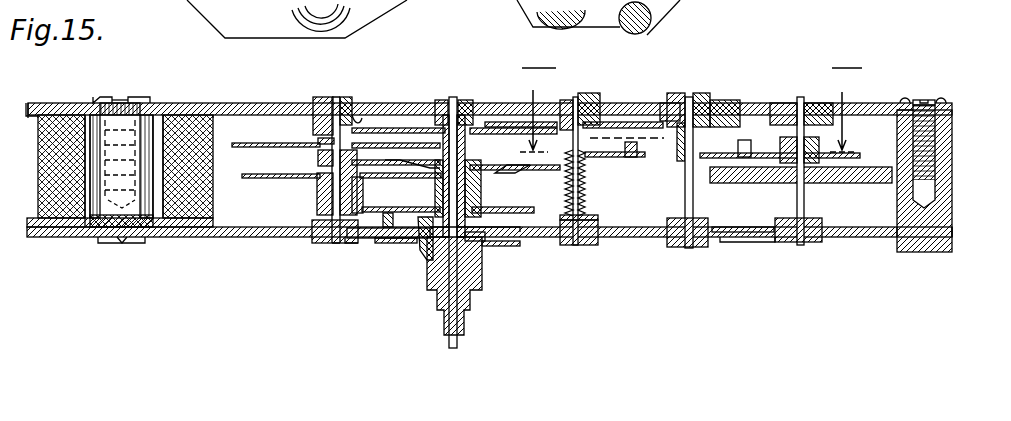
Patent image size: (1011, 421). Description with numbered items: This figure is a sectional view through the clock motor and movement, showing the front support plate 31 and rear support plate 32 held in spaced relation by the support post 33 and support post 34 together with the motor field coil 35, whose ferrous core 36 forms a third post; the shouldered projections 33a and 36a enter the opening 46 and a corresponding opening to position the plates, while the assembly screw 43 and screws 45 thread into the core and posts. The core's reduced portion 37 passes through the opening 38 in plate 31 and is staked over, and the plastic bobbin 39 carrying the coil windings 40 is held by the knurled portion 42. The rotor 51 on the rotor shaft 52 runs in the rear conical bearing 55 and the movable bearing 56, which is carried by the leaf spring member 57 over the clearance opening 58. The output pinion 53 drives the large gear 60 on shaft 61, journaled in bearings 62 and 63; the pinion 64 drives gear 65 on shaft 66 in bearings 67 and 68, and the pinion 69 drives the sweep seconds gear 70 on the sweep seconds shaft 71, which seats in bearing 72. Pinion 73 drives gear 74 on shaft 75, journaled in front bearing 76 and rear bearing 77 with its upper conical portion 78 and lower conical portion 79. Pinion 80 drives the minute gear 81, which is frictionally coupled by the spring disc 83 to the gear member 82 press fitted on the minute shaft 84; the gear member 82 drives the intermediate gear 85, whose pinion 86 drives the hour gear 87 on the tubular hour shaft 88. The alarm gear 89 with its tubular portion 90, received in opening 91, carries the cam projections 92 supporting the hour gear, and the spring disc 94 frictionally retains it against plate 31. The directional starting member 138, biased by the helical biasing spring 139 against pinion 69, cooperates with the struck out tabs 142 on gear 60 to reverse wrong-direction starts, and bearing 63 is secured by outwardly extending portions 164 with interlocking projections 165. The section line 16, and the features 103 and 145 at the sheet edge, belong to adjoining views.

The front support plate 31 is at (248, 238).
The rear support plate 32 is at (222, 104).
The support post 33 is at (955, 214).
The shouldered projection 33a is at (944, 103).
The support post 34 is at (528, 14).
The motor field coil 35 is at (36, 175).
The ferrous core 36 is at (146, 118).
The shouldered projection 36a is at (124, 102).
The reduced portion 37 is at (106, 240).
The opening 38 is at (130, 240).
The plastic bobbin 39 is at (30, 110).
The coil windings 40 is at (58, 125).
The knurled portion 42 is at (88, 232).
The assembly screw 43 is at (106, 100).
The screw 45 is at (926, 100).
The opening 46 is at (912, 103).
The rotor 51 is at (832, 182).
The rotor shaft 52 is at (798, 195).
The output pinion 53 is at (810, 158).
The rear conical bearing 55 is at (802, 102).
The movable bearing 56 is at (806, 246).
The leaf spring member 57 is at (756, 226).
The clearance opening 58 is at (756, 242).
The large gear 60 is at (608, 158).
The shaft 61 is at (686, 190).
The bearing 62 is at (690, 248).
The bearing 63 is at (690, 100).
The pinion 64 is at (662, 124).
The gear 65 is at (624, 122).
The shaft 66 is at (588, 196).
The bearing 67 is at (580, 246).
The bearing 68 is at (590, 103).
The pinion 69 is at (562, 104).
The sweep seconds gear 70 is at (390, 128).
The sweep seconds shaft 71 is at (448, 100).
The bearing 72 is at (470, 104).
The pinion 73 is at (476, 147).
The gear 74 is at (271, 134).
The shaft 75 is at (314, 104).
The front bearing 76 is at (322, 245).
The rear bearing 77 is at (336, 98).
The upper conical portion 78 is at (320, 140).
The lower conical portion 79 is at (355, 120).
The pinion 80 is at (318, 158).
The minute gear 81 is at (494, 172).
The gear member 82 is at (440, 186).
The spring disc 83 is at (486, 170).
The minute shaft 84 is at (458, 320).
The intermediate gear 85 is at (256, 180).
The pinion 86 is at (318, 195).
The hour gear 87 is at (536, 176).
The tubular hour shaft 88 is at (428, 256).
The alarm gear 89 is at (543, 228).
The tubular portion 90 is at (478, 280).
The opening 91 is at (486, 242).
The cam projections 92 is at (386, 216).
The spring disc 94 is at (348, 246).
The frame 103 is at (533, 14).
The directional starting member 138 is at (627, 135).
The helical biasing spring 139 is at (584, 204).
The struck out tabs 142 is at (634, 158).
The wheel 145 is at (220, 7).
The outwardly extending portions 164 is at (724, 118).
The interlocking projections 165 is at (722, 126).
The section line 16- 16 is at (691, 109).